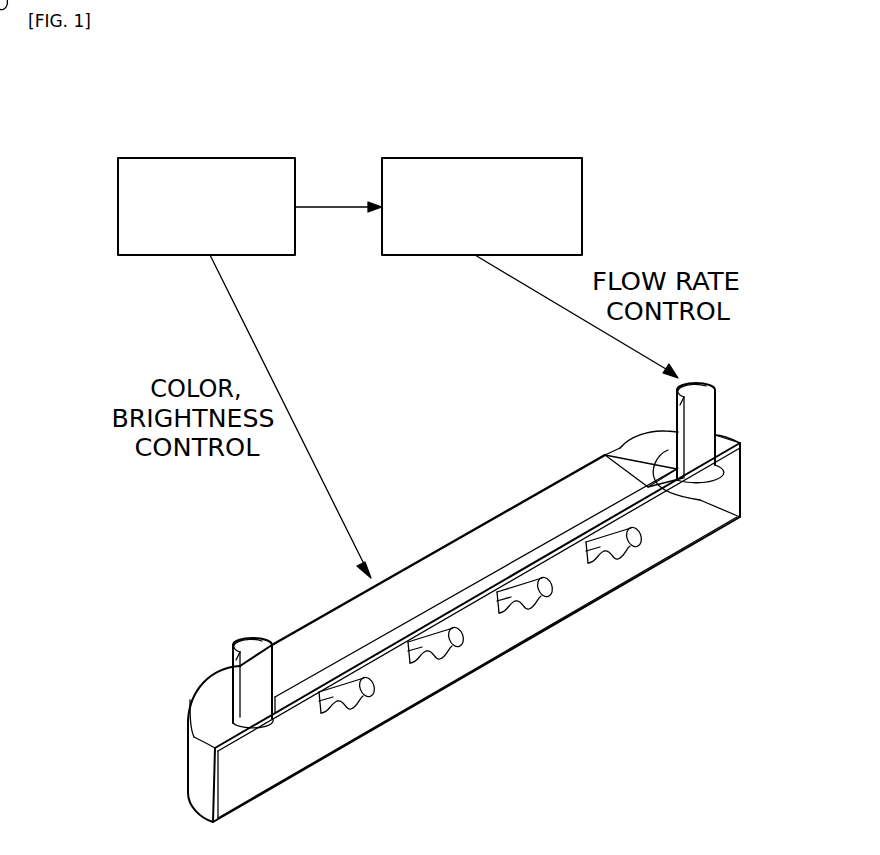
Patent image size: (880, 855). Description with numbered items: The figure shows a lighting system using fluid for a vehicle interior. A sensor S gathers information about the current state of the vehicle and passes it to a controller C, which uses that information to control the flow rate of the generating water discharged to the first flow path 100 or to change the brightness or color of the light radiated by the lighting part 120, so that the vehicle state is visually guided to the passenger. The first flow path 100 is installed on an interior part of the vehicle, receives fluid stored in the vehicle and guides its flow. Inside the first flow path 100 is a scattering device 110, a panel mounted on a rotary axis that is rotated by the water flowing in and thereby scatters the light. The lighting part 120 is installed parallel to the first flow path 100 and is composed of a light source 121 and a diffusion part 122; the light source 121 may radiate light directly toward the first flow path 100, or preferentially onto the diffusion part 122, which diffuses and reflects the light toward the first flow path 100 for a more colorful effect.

The sensor S is at (205, 158).
The controller C is at (480, 158).
The first flow path 100 is at (604, 573).
The scattering device 110 is at (345, 703).
The lighting part 120 is at (477, 527).
The light source 121 is at (627, 457).
The diffusion part 122 is at (479, 567).